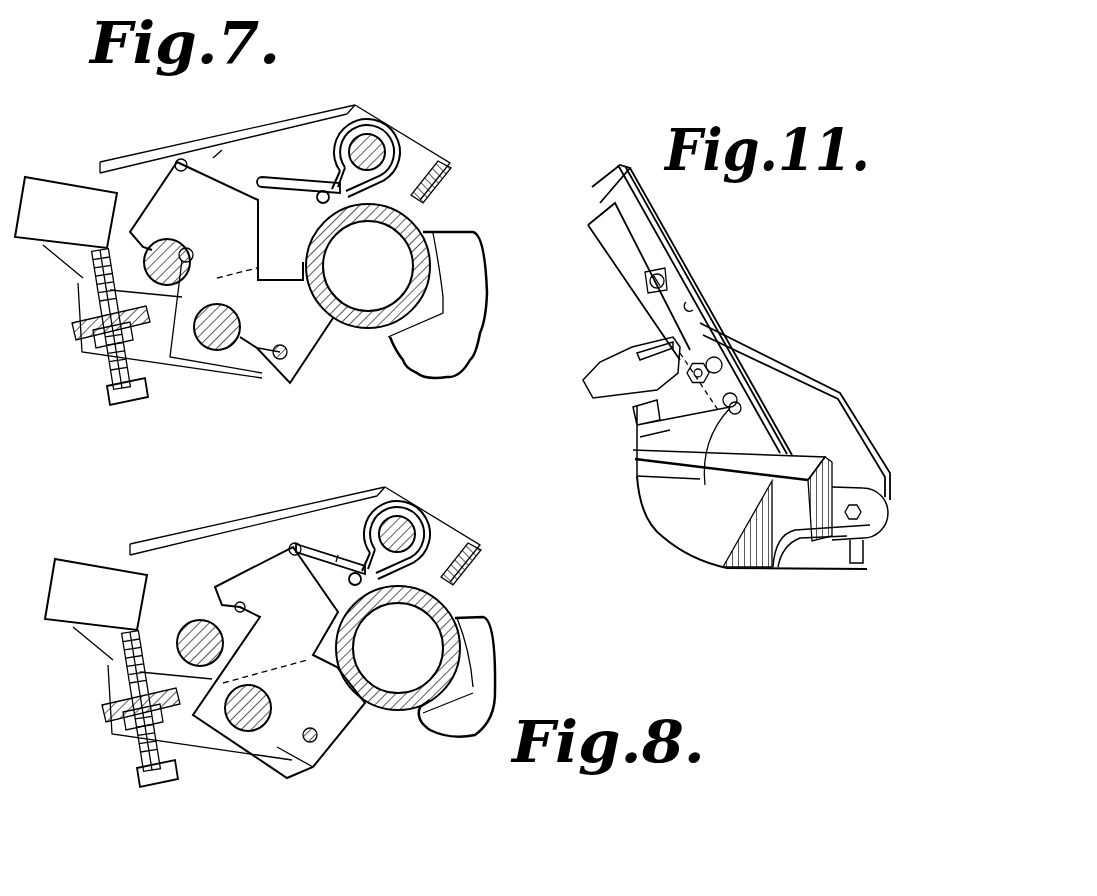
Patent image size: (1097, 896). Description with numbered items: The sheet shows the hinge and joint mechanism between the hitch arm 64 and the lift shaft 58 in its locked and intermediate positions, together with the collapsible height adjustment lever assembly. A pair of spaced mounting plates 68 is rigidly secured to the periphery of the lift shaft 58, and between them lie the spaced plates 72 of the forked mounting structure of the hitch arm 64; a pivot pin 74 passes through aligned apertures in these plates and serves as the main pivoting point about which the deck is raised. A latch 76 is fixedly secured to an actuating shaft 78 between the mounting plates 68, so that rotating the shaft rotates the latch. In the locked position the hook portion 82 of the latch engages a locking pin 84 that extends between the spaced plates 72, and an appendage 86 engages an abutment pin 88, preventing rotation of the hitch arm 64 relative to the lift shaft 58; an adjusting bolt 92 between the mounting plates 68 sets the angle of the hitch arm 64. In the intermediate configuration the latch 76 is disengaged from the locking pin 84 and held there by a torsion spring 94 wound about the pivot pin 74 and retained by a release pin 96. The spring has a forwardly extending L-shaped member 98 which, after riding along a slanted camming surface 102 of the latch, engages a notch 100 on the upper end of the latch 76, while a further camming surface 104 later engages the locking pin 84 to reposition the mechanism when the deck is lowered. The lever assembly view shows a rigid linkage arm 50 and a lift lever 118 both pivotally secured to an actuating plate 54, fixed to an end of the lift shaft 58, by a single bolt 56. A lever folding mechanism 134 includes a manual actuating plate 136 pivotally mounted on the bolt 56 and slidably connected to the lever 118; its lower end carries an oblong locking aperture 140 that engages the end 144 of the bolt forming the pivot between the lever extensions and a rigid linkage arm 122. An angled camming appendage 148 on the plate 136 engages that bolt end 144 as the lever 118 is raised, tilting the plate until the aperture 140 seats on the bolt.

In FIG. 11, the linkage arm 50 is at (623, 363).
In FIG. 11, the actuating plate 54 is at (798, 380).
In FIG. 11, the bolt 56 is at (727, 330).
In FIG. 7, the lift shaft 58 is at (413, 225).
In FIG. 8, the lift shaft 58 is at (440, 620).
In FIG. 7, the hitch arm 64 is at (48, 185).
In FIG. 8, the hitch arm 64 is at (80, 570).
In FIG. 7, the mounting plates 68 is at (303, 362).
In FIG. 7, the spaced plates 72 is at (272, 128).
In FIG. 7, the pivot pin 74 is at (370, 145).
In FIG. 8, the pivot pin 74 is at (396, 518).
In FIG. 7, the latch 76 is at (216, 221).
In FIG. 8, the latch 76 is at (279, 662).
In FIG. 7, the actuating shaft 78 is at (213, 352).
In FIG. 8, the actuating shaft 78 is at (243, 750).
In FIG. 7, the hook portion 82 is at (193, 256).
In FIG. 8, the hook portion 82 is at (243, 608).
In FIG. 7, the locking pin 84 is at (167, 243).
In FIG. 8, the locking pin 84 is at (190, 630).
In FIG. 7, the appendage 86 is at (265, 365).
In FIG. 8, the appendage 86 is at (290, 778).
In FIG. 7, the abutment pin 88 is at (280, 344).
In FIG. 8, the abutment pin 88 is at (312, 727).
In FIG. 7, the adjusting bolt 92 is at (110, 405).
In FIG. 8, the adjusting bolt 92 is at (182, 710).
In FIG. 7, the torsion spring 94 is at (405, 152).
In FIG. 8, the torsion spring 94 is at (433, 536).
In FIG. 7, the release pin 96 is at (316, 199).
In FIG. 8, the release pin 96 is at (363, 588).
In FIG. 7, the L-shaped member 98 is at (298, 178).
In FIG. 8, the L-shaped member 98 is at (300, 540).
In FIG. 7, the notch 100 is at (181, 158).
In FIG. 8, the notch 100 is at (290, 566).
In FIG. 7, the slanted camming surface 102 is at (215, 157).
In FIG. 8, the slanted camming surface 102 is at (336, 562).
In FIG. 8, the camming surface 104 is at (250, 568).
In FIG. 11, the lift lever 118 is at (663, 222).
In FIG. 11, the linkage arm 122 is at (673, 432).
In FIG. 11, the lever folding mechanism 134 is at (620, 311).
In FIG. 11, the manual actuating plate 136 is at (692, 303).
In FIG. 11, the locking aperture 140 is at (741, 402).
In FIG. 11, the bolt end 144 is at (725, 456).
In FIG. 11, the camming appendage 148 is at (665, 413).